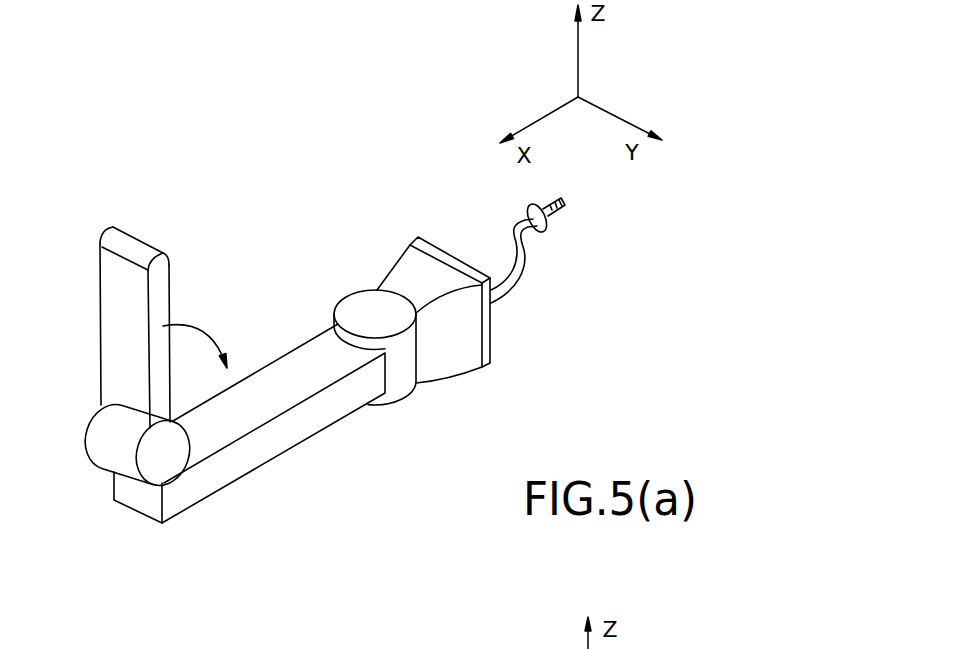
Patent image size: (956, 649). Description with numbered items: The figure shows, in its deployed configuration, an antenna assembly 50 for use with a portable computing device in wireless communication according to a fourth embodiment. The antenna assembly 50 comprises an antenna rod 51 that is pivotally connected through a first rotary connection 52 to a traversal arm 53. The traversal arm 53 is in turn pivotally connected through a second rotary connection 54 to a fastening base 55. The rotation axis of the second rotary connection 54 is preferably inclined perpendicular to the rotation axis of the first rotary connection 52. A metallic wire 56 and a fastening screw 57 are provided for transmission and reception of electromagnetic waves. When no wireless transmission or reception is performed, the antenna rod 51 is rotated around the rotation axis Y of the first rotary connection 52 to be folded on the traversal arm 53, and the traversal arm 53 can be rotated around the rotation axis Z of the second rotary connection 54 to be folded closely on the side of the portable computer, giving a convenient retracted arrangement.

The antenna assembly 50 is at (98, 552).
The antenna rod 51 is at (163, 283).
The first rotary connection 52 is at (97, 430).
The traversal arm 53 is at (278, 368).
The second rotary connection 54 is at (357, 306).
The fastening base 55 is at (411, 266).
The metallic wire 56 is at (509, 229).
The fastening screw 57 is at (545, 232).